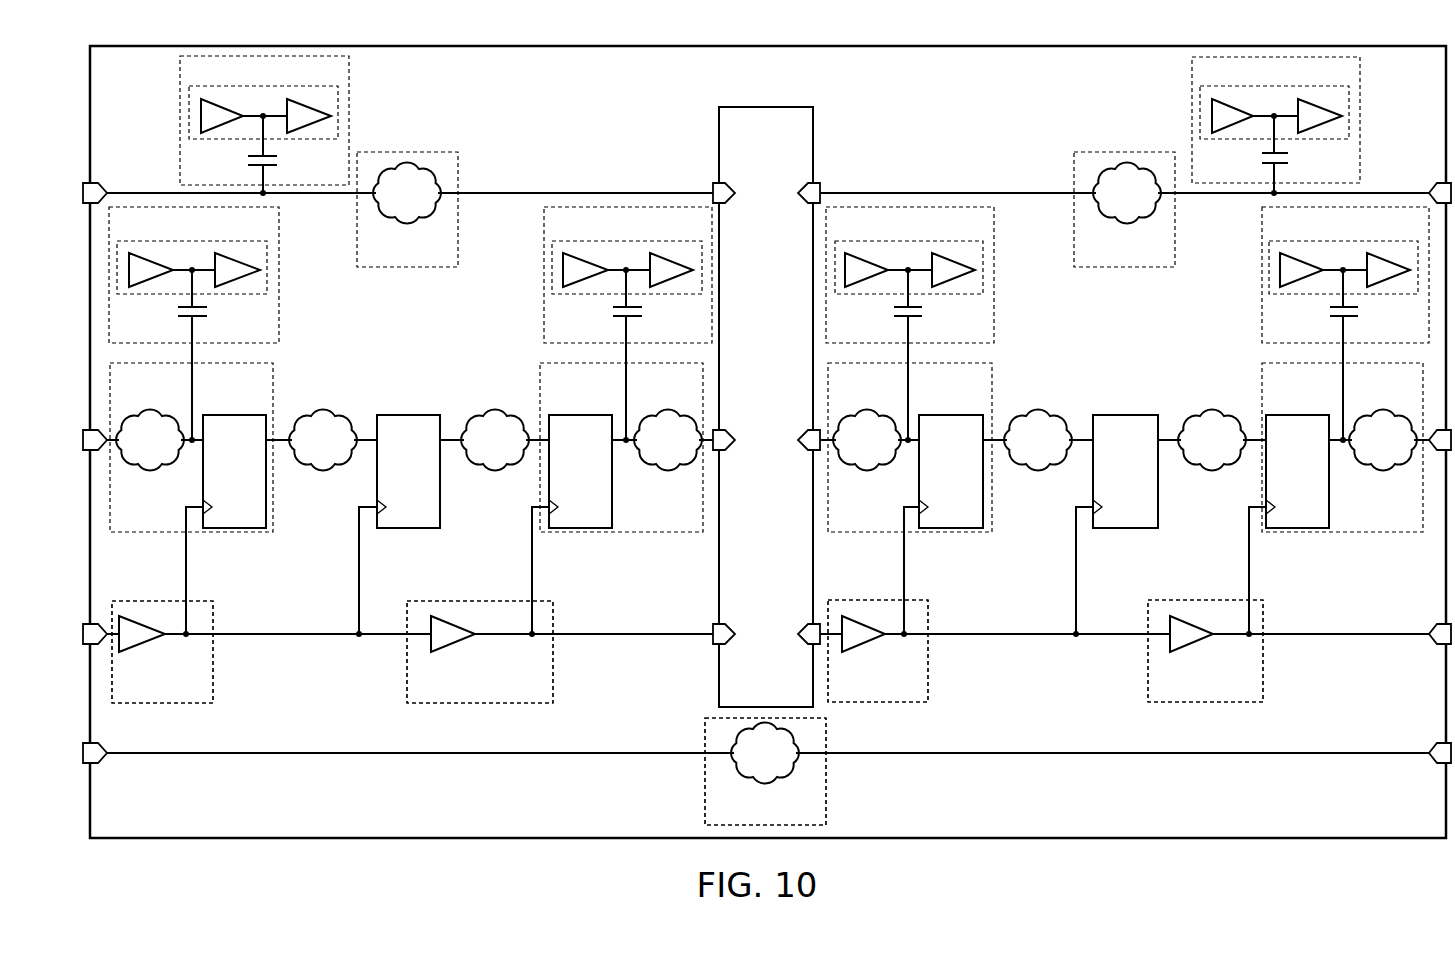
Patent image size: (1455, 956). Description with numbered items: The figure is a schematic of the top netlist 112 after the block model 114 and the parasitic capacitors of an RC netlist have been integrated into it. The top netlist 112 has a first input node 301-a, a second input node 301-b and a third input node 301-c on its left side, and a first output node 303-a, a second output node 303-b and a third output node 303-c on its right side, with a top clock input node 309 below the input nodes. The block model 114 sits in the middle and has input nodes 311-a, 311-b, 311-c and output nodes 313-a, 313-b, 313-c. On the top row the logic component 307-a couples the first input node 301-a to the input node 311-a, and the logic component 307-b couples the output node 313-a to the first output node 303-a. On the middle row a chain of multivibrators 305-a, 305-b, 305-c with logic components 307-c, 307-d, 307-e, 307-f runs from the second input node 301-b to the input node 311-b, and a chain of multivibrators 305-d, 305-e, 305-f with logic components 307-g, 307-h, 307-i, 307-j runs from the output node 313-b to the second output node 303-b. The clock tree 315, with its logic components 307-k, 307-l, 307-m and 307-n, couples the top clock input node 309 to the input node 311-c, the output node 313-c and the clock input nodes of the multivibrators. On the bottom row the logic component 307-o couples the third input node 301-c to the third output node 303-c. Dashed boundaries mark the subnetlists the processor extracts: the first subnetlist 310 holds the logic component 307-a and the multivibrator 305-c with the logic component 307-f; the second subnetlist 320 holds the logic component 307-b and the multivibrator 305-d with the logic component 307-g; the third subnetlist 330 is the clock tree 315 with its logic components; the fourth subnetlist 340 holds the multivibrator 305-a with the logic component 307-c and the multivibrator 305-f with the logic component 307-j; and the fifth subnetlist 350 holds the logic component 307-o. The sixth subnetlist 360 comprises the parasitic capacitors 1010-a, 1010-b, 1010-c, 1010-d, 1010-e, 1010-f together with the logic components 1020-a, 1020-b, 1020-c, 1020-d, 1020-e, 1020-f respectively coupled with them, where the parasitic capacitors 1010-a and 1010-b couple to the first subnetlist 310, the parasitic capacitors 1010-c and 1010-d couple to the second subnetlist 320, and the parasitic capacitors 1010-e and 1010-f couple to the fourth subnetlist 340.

The top netlist 112 is at (417, 46).
The block model 114 is at (752, 107).
The first input node 301-a is at (108, 182).
The second input node 301-b is at (108, 452).
The third input node 301-c is at (108, 763).
The first output node 303-a is at (1428, 183).
The second output node 303-b is at (1435, 452).
The third output node 303-c is at (1440, 763).
The multivibrator 305-a is at (222, 415).
The multivibrator 305-b is at (395, 415).
The multivibrator 305-c is at (567, 415).
The multivibrator 305-d is at (937, 415).
The multivibrator 305-e is at (1110, 415).
The multivibrator 305-f is at (1283, 415).
The logic component 307-a is at (407, 219).
The logic component 307-b is at (1127, 219).
The logic component 307-c is at (150, 466).
The logic component 307-d is at (323, 466).
The logic component 307-e is at (495, 466).
The logic component 307-f is at (668, 466).
The logic component 307-g is at (867, 466).
The logic component 307-h is at (1038, 466).
The logic component 307-i is at (1212, 466).
The logic component 307-j is at (1383, 466).
The logic component 307-k is at (135, 650).
The logic component 307-l is at (447, 650).
The logic component 307-m is at (855, 650).
The logic component 307-n is at (1183, 650).
The logic component 307-o is at (765, 779).
The top clock input node 309 is at (108, 645).
The first subnetlist 310 is at (540, 380).
The input node 311-a is at (720, 203).
The input node 311-b is at (722, 450).
The input node 311-c is at (735, 645).
The output node 313-a is at (800, 183).
The output node 313-b is at (800, 428).
The output node 313-c is at (800, 623).
The clock tree 315 is at (622, 634).
The second subnetlist 320 is at (992, 380).
The third subnetlist 330 is at (213, 680).
The fourth subnetlist 340 is at (273, 378).
The fifth subnetlist 350 is at (705, 795).
The sixth subnetlist 360 is at (349, 80).
The parasitic capacitor 1010-a is at (248, 158).
The parasitic capacitor 1010-b is at (613, 310).
The parasitic capacitor 1010-c is at (1262, 156).
The parasitic capacitor 1010-d is at (894, 310).
The parasitic capacitor 1010-e is at (178, 310).
The parasitic capacitor 1010-f is at (1330, 310).
The logic component 1020-a is at (214, 86).
The logic component 1020-b is at (568, 241).
The logic component 1020-c is at (1225, 86).
The logic component 1020-d is at (852, 241).
The logic component 1020-e is at (140, 241).
The logic component 1020-f is at (1290, 241).